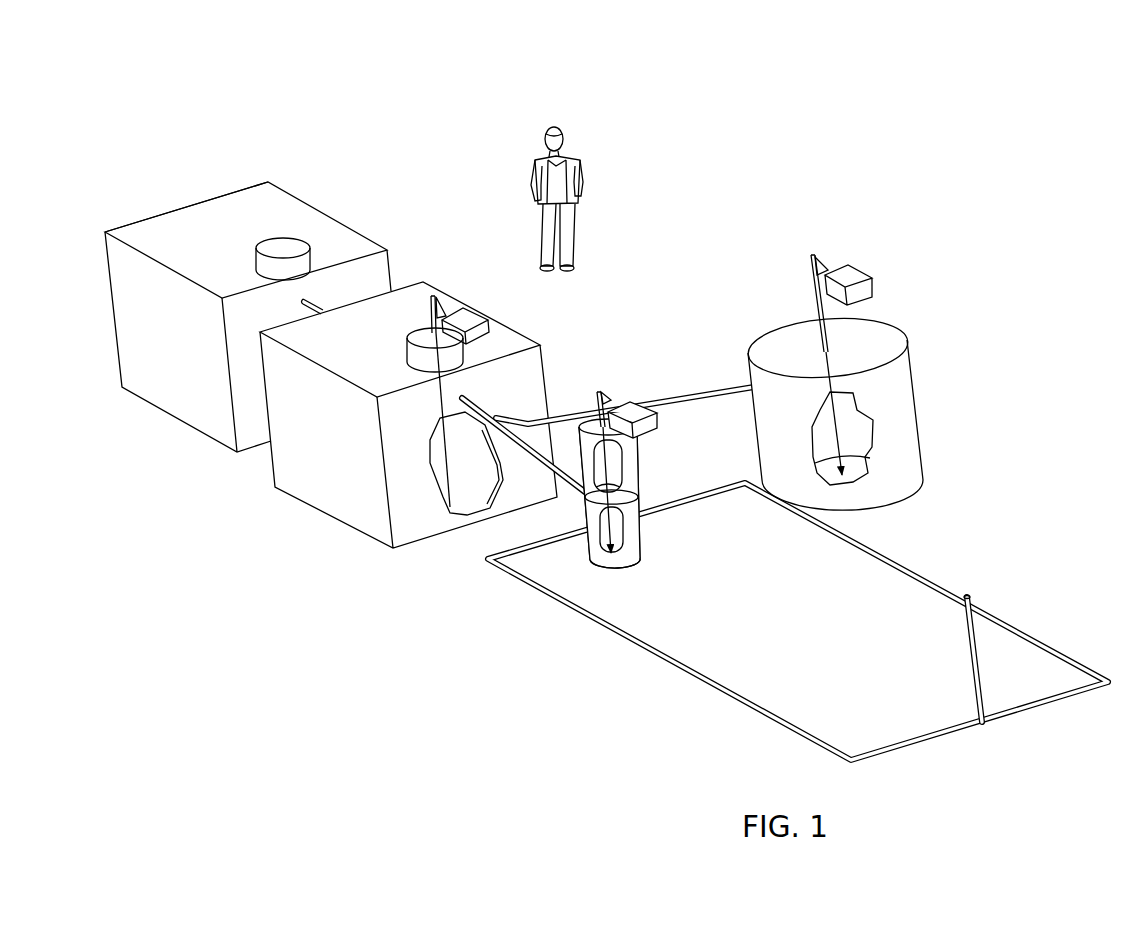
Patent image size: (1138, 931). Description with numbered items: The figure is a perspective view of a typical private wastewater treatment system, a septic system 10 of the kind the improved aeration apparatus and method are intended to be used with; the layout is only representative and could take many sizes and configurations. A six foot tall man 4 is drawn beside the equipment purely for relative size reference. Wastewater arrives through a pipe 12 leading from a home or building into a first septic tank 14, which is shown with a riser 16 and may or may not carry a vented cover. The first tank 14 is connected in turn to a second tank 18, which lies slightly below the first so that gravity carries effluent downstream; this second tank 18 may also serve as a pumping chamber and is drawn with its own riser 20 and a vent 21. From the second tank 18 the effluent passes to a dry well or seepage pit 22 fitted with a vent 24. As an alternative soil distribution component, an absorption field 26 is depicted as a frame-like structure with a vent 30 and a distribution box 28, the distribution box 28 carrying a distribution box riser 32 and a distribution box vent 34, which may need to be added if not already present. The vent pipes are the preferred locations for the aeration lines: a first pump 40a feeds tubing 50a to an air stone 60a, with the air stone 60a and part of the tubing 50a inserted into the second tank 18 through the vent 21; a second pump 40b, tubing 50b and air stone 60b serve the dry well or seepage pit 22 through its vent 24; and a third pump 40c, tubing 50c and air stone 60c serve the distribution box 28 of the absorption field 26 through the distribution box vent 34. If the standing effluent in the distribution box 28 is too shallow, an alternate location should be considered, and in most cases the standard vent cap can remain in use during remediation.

The septic system 10 is at (836, 85).
The six foot tall man 4 is at (602, 163).
The pipe 12 is at (186, 156).
The first septic tank 14 is at (230, 320).
The riser 16 is at (305, 182).
The second tank 18 is at (363, 445).
The riser 20 is at (396, 263).
The vent 21 is at (400, 312).
The dry well or seepage pit 22 is at (883, 412).
The vent 24 is at (766, 331).
The absorption field 26 is at (794, 621).
The distribution box 28 is at (671, 606).
The vent 30 is at (1033, 635).
The distribution box riser 32 is at (662, 493).
The distribution box vent 34 is at (579, 422).
The first pump 40a is at (487, 277).
The second pump 40b is at (922, 264).
The third pump 40c is at (674, 379).
The tubing 50a is at (476, 226).
The tubing 50b is at (904, 220).
The tubing 50c is at (658, 343).
The air stone 60a is at (433, 516).
The air stone 60b is at (926, 440).
The air stone 60c is at (551, 540).